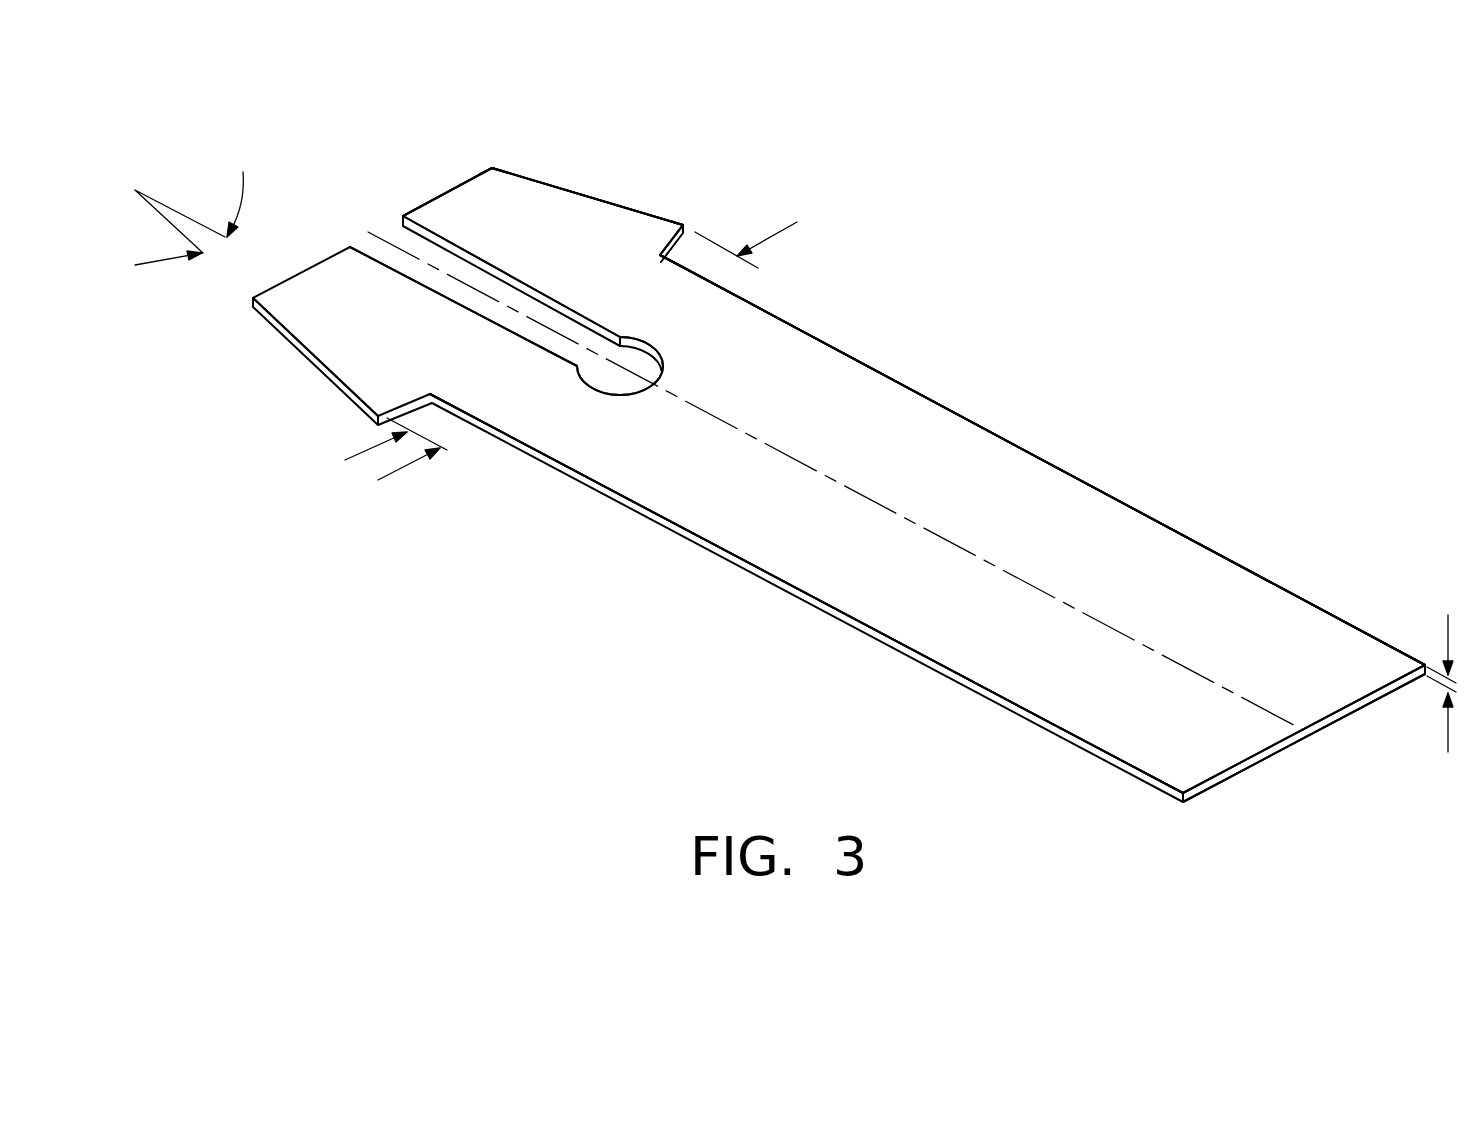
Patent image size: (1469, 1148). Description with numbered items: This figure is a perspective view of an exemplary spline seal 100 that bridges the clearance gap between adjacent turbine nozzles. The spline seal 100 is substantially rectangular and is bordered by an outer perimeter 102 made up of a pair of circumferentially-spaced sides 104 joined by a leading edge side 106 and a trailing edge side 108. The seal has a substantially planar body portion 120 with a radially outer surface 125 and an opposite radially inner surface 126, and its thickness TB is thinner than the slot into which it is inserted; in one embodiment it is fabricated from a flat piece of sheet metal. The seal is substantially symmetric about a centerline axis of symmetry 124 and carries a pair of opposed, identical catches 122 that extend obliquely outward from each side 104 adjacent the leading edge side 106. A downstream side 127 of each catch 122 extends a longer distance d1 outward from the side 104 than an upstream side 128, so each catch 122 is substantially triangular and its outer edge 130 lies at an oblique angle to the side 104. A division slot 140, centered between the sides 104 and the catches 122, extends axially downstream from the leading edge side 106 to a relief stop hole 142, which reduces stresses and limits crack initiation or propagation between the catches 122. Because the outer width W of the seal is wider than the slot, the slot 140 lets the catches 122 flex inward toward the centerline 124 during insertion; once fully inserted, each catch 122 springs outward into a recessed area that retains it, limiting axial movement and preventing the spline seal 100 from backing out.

The spline seal 100 is at (1092, 195).
The outer perimeter 102 is at (1073, 472).
The circumferentially-spaced sides 104 is at (1250, 573).
The leading edge side 106 is at (448, 192).
The trailing edge side 108 is at (1238, 775).
The body portion 120 is at (1083, 553).
The catch 122 is at (655, 223).
The centerline axis of symmetry 124 is at (803, 462).
The radially outer surface 125 is at (989, 493).
The radially inner surface 126 is at (1092, 757).
The downstream side of catch 127 is at (683, 217).
The upstream side of catch 128 is at (508, 162).
The outer edge of catch 130 is at (580, 190).
The division slot 140 is at (373, 252).
The relief stop hole 142 is at (598, 392).
The outer width W is at (778, 235).
The distance d1 is at (392, 473).
The thickness TB is at (1448, 733).